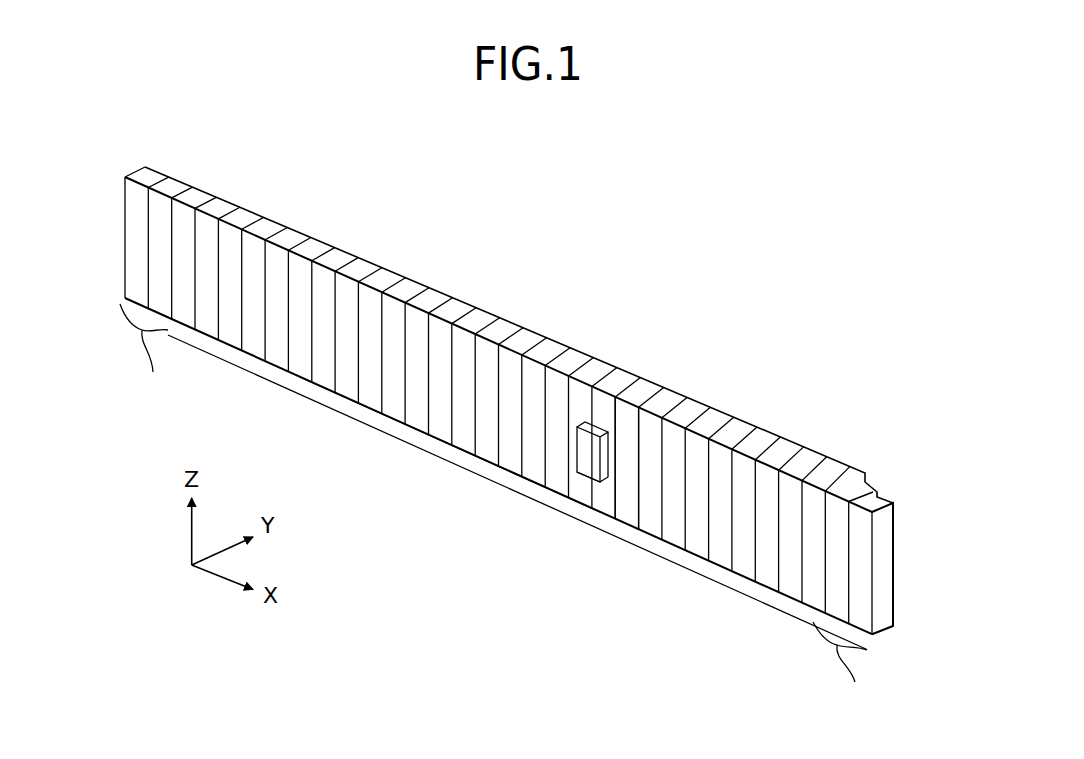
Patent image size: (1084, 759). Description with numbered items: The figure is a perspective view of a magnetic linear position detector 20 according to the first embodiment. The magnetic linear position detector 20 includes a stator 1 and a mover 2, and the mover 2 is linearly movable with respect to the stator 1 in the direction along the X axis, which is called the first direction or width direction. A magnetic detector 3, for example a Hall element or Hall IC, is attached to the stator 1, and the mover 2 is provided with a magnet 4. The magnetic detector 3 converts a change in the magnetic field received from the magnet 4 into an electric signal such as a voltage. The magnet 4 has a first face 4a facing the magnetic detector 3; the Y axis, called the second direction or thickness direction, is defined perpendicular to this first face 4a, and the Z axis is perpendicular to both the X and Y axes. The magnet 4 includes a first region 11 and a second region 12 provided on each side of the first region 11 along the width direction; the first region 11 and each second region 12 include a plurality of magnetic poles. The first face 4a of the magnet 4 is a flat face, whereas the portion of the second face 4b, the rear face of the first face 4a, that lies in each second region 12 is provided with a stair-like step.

The magnetic linear position detector 20 is at (786, 224).
The stator 1 is at (583, 464).
The mover 2 is at (894, 534).
The magnetic detector 3 is at (593, 472).
The magnet 4 is at (894, 565).
The first face 4a is at (627, 508).
The second face 4b is at (764, 418).
The first region 11 is at (461, 469).
The second region 12 is at (495, 510).